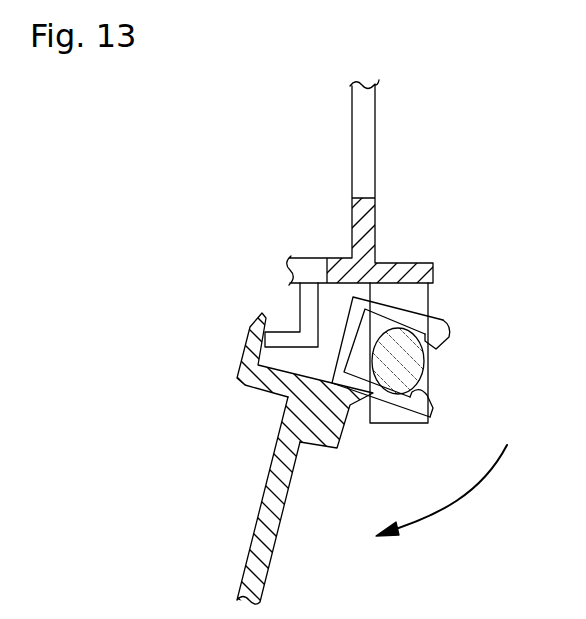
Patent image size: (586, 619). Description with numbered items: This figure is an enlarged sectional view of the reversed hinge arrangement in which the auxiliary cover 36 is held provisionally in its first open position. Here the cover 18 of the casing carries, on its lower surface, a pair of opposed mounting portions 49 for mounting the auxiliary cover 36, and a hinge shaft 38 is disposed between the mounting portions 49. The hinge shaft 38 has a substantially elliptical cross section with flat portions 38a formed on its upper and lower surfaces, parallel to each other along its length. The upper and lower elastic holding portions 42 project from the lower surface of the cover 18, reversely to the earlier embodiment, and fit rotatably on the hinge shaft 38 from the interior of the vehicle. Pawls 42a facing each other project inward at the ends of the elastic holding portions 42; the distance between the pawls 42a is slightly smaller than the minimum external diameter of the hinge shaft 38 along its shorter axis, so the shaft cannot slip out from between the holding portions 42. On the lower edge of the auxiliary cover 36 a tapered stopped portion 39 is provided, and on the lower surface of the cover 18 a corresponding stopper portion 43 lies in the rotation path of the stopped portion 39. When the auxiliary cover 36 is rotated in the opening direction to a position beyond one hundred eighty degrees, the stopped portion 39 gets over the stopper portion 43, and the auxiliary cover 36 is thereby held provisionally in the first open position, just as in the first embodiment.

The cover 18 is at (352, 224).
The auxiliary cover 36 is at (249, 520).
The hinge shaft 38 is at (446, 361).
The flat portions 38a is at (409, 318).
The stopped portion 39 is at (242, 356).
The elastic holding portions 42 is at (396, 262).
The pawls 42a is at (441, 341).
The stopper portion 43 is at (298, 314).
The mounting portions 49 is at (408, 297).